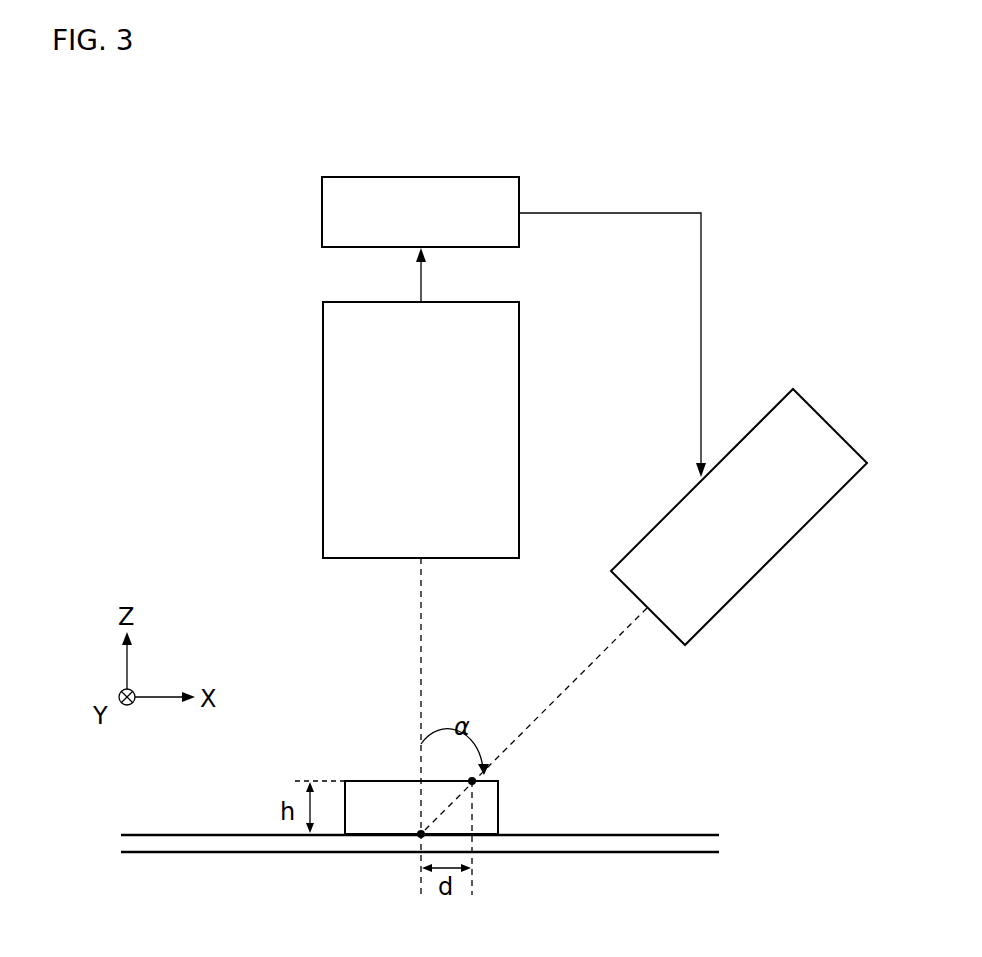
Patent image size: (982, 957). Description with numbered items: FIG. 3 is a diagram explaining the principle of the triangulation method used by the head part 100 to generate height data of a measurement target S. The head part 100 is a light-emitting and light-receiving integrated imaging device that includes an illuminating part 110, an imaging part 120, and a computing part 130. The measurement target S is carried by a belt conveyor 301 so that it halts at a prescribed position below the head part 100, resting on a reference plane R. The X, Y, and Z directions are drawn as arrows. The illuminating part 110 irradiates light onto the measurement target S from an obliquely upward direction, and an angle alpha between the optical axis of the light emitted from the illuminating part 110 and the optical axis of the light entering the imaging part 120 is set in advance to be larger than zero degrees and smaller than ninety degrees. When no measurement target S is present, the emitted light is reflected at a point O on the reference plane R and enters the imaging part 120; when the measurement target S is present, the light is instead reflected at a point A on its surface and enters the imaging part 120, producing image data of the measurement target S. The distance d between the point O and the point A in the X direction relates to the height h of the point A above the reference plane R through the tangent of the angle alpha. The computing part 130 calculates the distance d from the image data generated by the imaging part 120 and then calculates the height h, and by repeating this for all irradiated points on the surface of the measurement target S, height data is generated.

The head part 100 is at (127, 132).
The illuminating part 110 is at (832, 423).
The imaging part 120 is at (435, 302).
The computing part 130 is at (421, 177).
The belt conveyor 301 is at (649, 842).
The reference plane R is at (101, 837).
The measurement target S is at (368, 781).
The point on surface of measurement target A is at (480, 789).
The point on reference plane O is at (413, 841).